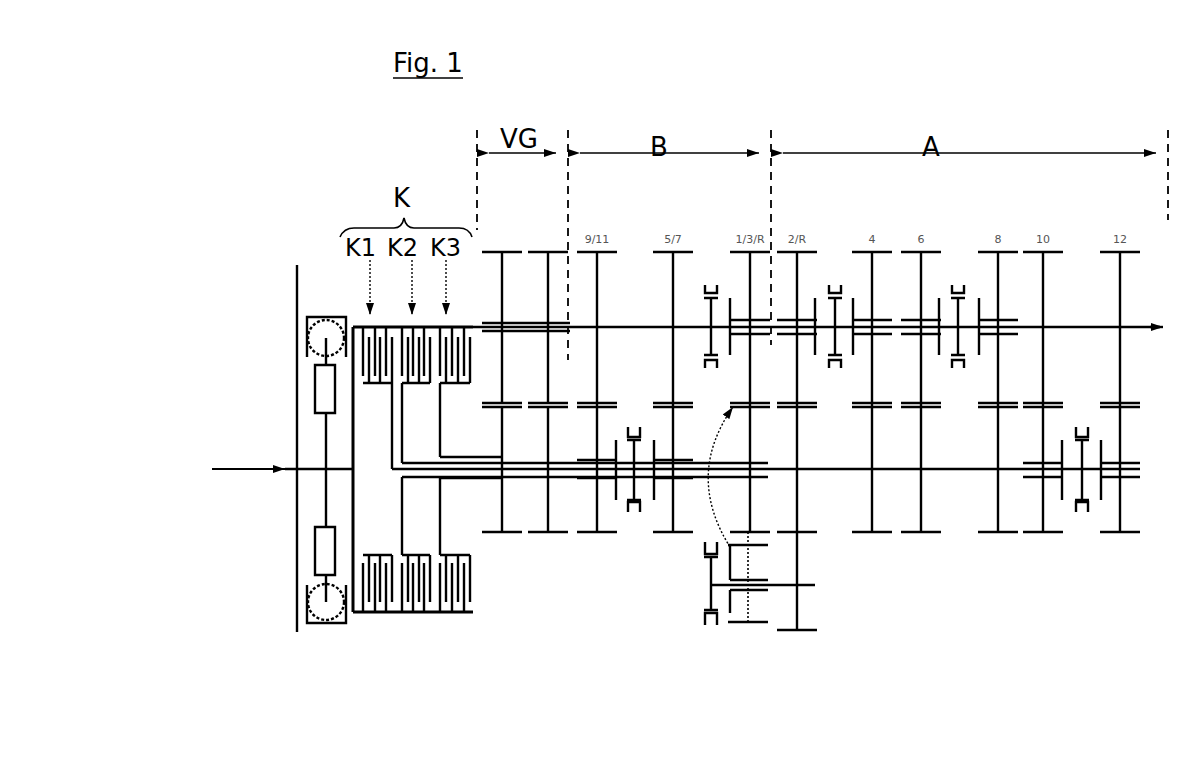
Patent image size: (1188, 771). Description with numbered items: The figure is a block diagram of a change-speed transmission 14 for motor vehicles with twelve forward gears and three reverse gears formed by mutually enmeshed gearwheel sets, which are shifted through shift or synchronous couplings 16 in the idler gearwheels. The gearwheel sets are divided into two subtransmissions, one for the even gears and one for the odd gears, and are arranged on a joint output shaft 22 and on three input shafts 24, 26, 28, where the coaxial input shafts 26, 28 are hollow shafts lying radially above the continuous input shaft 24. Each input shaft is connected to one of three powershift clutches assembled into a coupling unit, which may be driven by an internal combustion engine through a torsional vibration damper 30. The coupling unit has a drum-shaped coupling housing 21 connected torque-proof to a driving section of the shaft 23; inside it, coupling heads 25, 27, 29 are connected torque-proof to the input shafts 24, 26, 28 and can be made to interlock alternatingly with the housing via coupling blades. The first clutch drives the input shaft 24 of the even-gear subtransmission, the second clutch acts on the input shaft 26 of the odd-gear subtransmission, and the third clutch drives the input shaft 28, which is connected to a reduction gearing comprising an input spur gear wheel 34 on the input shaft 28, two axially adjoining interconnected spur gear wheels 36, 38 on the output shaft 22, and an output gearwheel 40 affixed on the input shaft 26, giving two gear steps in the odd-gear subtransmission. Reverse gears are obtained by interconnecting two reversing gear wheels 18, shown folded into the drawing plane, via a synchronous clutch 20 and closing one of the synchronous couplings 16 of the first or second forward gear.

The change-speed transmission 14 is at (882, 592).
The synchronous coupling 16 is at (711, 281).
The reversing gear wheels 18 is at (747, 623).
The synchronous clutch 20 is at (702, 628).
The drum-shaped coupling housing 21 is at (353, 325).
The output shaft 22 is at (638, 327).
The shaft 23 is at (333, 478).
The input shaft 24 is at (965, 468).
The coupling head 25 is at (440, 413).
The input shaft 26 is at (528, 534).
The coupling head 27 is at (402, 412).
The input shaft 28 is at (466, 483).
The coupling head 29 is at (392, 432).
The torsional vibration damper 30 is at (285, 631).
The input spur gear wheel 34 is at (483, 534).
The spur gear wheel 36 is at (502, 300).
The spur gear wheel 38 is at (548, 310).
The output gearwheel 40 is at (562, 534).